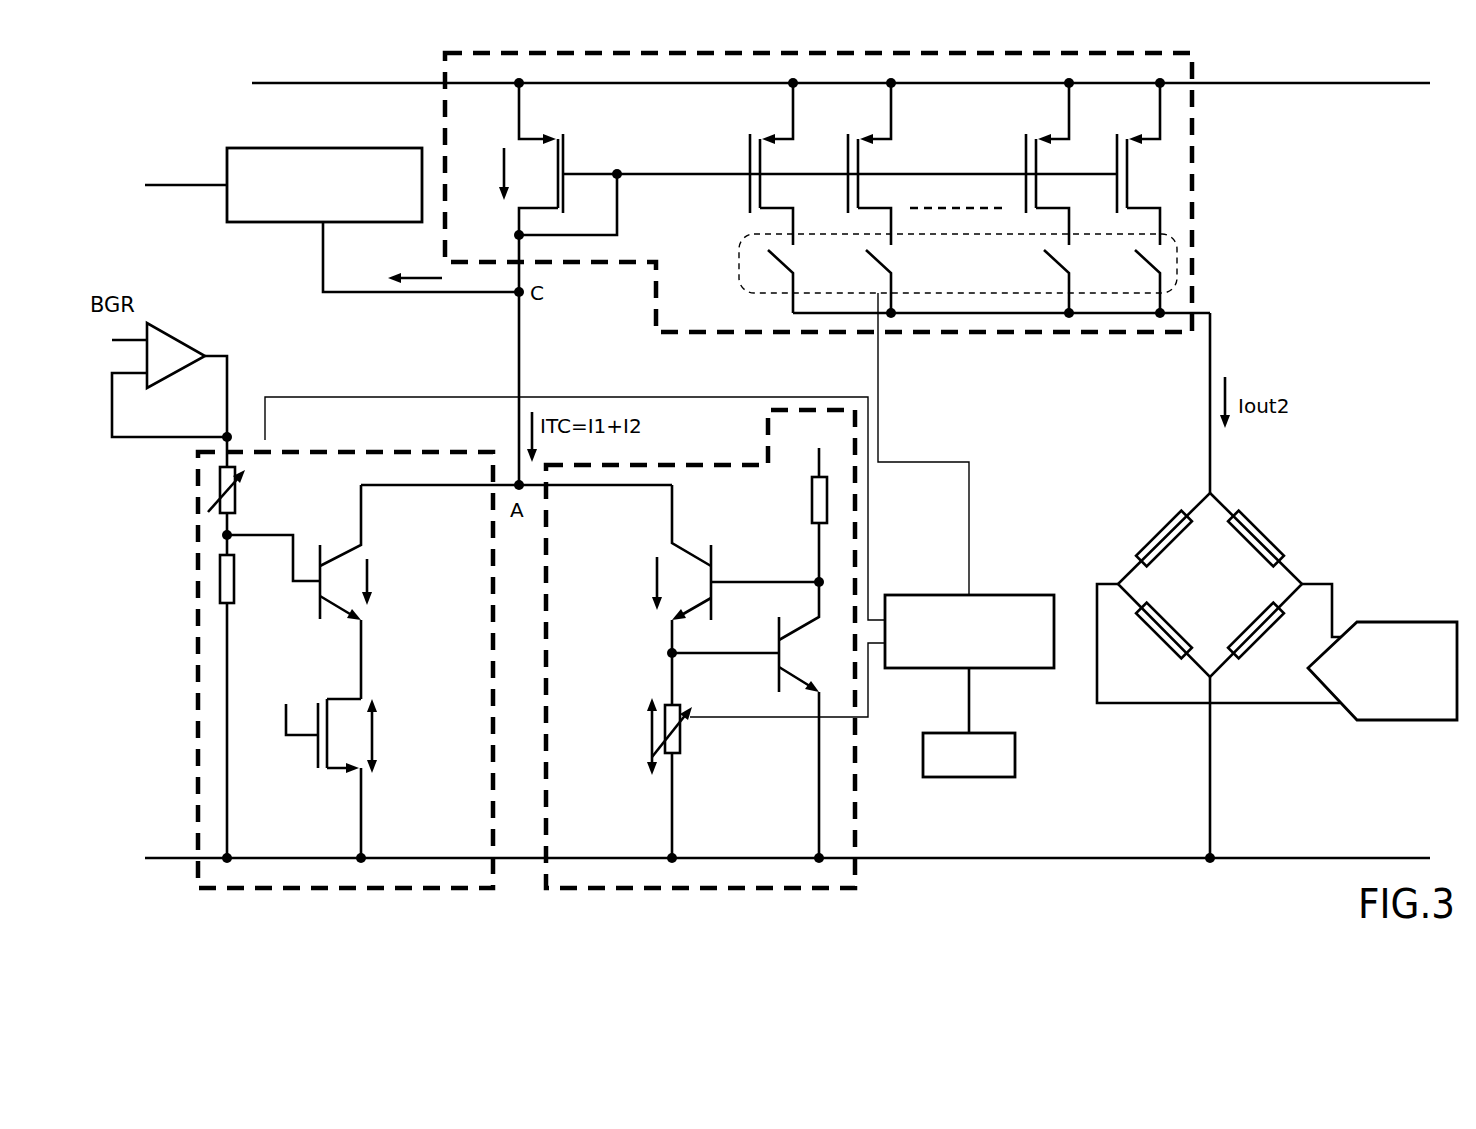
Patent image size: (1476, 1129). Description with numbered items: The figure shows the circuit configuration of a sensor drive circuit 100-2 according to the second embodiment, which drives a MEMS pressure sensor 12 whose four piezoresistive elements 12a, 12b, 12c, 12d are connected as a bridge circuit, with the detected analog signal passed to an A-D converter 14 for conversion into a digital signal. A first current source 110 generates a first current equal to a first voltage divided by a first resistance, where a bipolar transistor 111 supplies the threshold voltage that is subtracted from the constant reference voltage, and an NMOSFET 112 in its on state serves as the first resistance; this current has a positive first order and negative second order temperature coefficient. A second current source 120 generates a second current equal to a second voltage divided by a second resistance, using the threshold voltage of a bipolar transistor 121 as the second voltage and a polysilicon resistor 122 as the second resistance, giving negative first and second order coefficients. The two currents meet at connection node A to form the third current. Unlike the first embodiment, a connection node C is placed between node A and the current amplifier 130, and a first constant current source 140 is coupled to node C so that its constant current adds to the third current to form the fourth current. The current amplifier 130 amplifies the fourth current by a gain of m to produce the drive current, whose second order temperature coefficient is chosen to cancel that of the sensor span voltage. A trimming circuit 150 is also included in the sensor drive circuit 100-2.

The sensor drive circuit 100-2 is at (1460, 58).
The first constant current source 140 is at (413, 147).
The current amplifier 130 is at (1193, 175).
The first current source 110 is at (373, 889).
The bipolar transistor 111 is at (307, 610).
The NMOSFET 112 is at (343, 797).
The second current source 120 is at (763, 889).
The bipolar transistor 121 is at (762, 642).
The polysilicon resistor 122 is at (685, 786).
The trimming circuit 150 is at (1027, 595).
The MEMS pressure sensor 12 is at (1322, 556).
The piezoresistive element 12a is at (1155, 532).
The piezoresistive element 12b is at (1270, 532).
The piezoresistive element 12c is at (1248, 650).
The piezoresistive element 12d is at (1155, 638).
The A-D converter 14 is at (1408, 622).